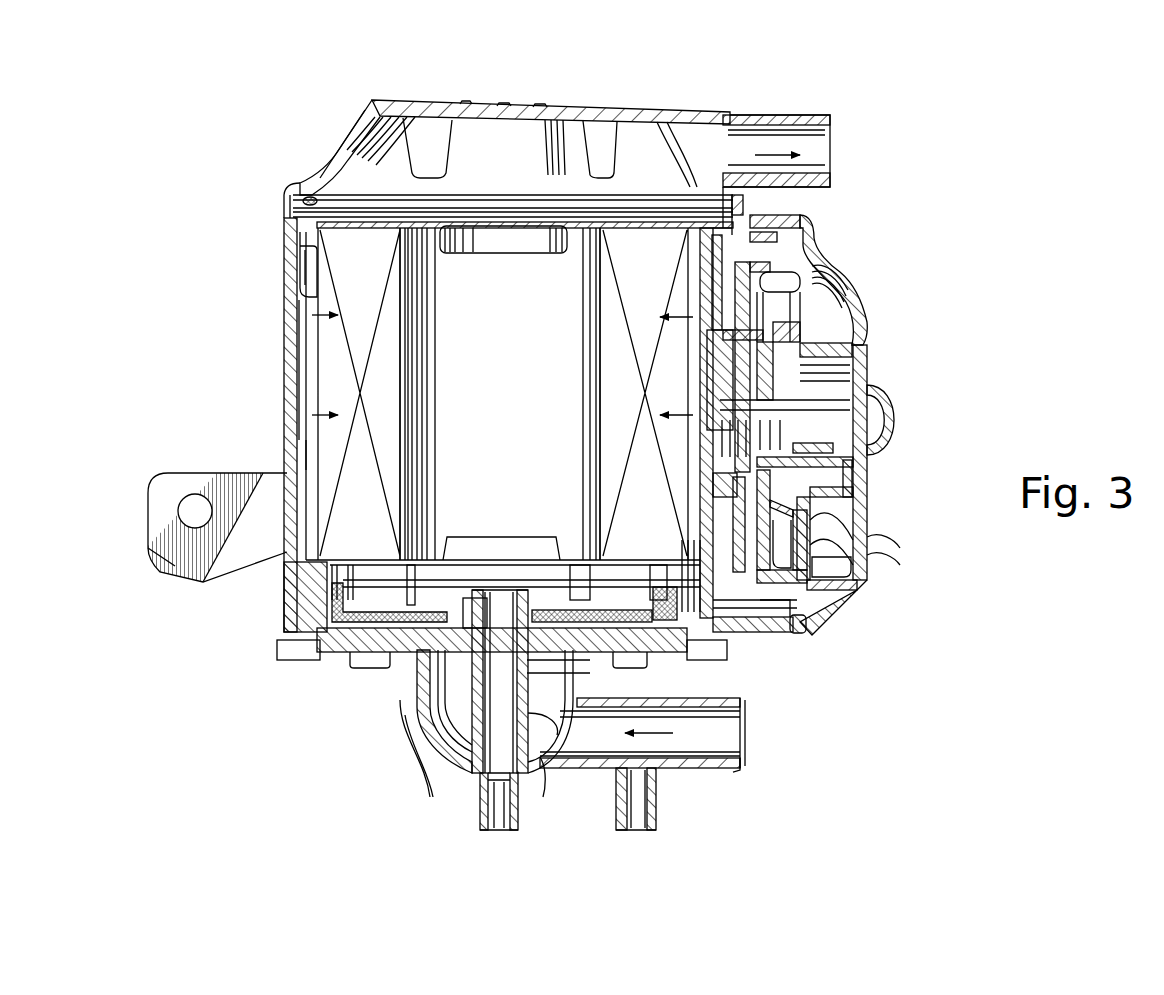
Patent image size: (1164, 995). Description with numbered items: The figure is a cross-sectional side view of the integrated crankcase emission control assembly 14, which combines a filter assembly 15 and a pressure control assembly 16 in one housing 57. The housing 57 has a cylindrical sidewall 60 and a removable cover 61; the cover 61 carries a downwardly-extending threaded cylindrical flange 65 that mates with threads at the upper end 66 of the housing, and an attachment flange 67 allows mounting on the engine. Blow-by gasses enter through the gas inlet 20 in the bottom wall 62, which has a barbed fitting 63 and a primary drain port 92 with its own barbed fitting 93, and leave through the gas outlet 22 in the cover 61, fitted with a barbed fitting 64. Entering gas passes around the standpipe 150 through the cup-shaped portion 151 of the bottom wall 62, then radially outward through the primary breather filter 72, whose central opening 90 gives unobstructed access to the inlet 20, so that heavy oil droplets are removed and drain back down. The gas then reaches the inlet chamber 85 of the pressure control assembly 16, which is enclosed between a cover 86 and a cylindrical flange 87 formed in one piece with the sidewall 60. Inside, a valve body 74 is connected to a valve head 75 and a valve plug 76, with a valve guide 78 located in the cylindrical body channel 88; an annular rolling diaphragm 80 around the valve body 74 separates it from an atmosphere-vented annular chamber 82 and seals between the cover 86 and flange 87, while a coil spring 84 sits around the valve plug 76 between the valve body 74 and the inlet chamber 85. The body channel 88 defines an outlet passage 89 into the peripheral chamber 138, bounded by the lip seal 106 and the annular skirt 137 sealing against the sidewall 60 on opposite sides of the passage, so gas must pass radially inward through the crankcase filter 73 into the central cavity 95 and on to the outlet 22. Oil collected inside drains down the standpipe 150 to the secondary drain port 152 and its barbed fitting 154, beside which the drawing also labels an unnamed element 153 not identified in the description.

The integrated crankcase emission control assembly 14 is at (690, 112).
The barbed fitting 64 is at (818, 110).
The gas outlet 22 is at (835, 150).
The removable cover 61 is at (345, 180).
The upper end of housing 66 is at (298, 190).
The cylindrical flange 65 is at (292, 205).
The lip seal 106 is at (283, 287).
The housing 57 is at (283, 303).
The annular skirt 137 is at (287, 327).
The cylindrical sidewall 60 is at (293, 400).
The peripheral chamber 138 is at (300, 400).
The crankcase filter 73 is at (318, 447).
The central cavity 95 is at (523, 389).
The outlet passage 89 is at (733, 383).
The valve plug 76 is at (705, 458).
The cylindrical body channel 88 is at (695, 515).
The bottom wall 62 is at (340, 652).
The filter assembly 15 is at (290, 628).
The attachment flange 67 is at (203, 573).
The secondary drain port 152 is at (495, 590).
The cup-shaped portion 151 is at (440, 750).
The central opening 90 is at (420, 703).
The standpipe 150 is at (538, 778).
The tube bore 153 is at (518, 813).
The barbed fitting 154 is at (486, 825).
The gas inlet 20 is at (732, 743).
The barbed fitting 63 is at (740, 770).
The primary drain port 92 is at (660, 828).
The barbed fitting 93 is at (652, 818).
The pressure control assembly 16 is at (905, 362).
The cover 86 is at (868, 323).
The annular chamber 82 is at (823, 295).
The coil spring 84 is at (866, 490).
The valve guide 78 is at (843, 427).
The valve body 74 is at (857, 520).
The valve head 75 is at (857, 555).
The rolling diaphragm 80 is at (862, 592).
The primary breather filter 72 is at (727, 622).
The inlet chamber 85 is at (753, 632).
The cylindrical flange 87 is at (775, 632).